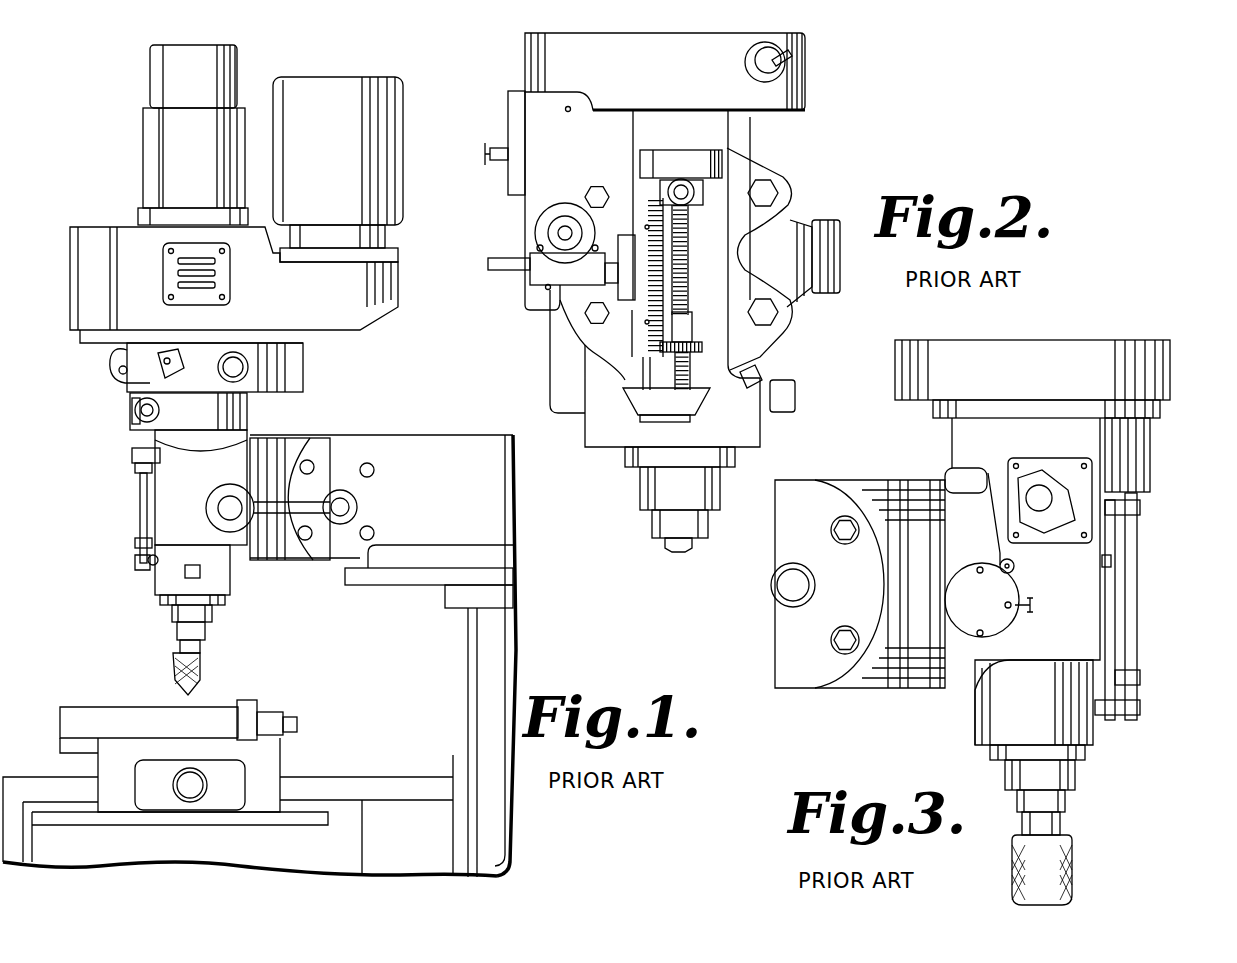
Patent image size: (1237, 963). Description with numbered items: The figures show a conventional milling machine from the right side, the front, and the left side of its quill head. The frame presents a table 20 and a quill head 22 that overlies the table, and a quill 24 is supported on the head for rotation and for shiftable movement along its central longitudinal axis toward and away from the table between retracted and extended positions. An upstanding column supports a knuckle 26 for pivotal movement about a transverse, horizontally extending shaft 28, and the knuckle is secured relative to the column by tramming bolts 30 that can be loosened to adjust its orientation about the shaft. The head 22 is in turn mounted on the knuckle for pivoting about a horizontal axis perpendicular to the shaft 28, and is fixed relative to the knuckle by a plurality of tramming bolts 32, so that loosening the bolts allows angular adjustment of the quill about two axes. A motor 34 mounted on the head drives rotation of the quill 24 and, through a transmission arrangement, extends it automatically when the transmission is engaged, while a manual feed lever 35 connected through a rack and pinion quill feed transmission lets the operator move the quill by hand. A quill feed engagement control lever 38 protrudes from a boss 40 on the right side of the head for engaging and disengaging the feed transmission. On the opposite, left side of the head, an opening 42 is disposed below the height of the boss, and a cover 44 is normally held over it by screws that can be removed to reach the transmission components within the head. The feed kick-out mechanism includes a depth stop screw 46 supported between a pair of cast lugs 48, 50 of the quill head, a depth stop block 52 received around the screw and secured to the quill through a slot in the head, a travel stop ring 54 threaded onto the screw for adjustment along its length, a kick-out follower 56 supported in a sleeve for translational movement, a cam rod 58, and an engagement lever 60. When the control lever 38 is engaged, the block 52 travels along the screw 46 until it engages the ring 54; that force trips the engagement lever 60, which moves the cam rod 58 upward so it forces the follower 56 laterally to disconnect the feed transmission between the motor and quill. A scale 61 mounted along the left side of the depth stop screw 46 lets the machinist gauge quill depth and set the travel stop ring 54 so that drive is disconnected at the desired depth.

In FIG. 1, the table 20 is at (60, 707).
In FIG. 1, the quill head 22 is at (108, 388).
In FIG. 2, the quill head 22 is at (525, 47).
In FIG. 3, the quill head 22 is at (1073, 338).
In FIG. 1, the quill 24 is at (210, 603).
In FIG. 2, the quill 24 is at (628, 455).
In FIG. 3, the quill 24 is at (1082, 752).
In FIG. 1, the knuckle 26 is at (292, 442).
In FIG. 3, the knuckle 26 is at (863, 688).
In FIG. 1, the shaft 28 is at (333, 492).
In FIG. 3, the shaft 28 is at (790, 590).
In FIG. 1, the tramming bolts 30 is at (310, 460).
In FIG. 3, the tramming bolts 30 is at (840, 525).
In FIG. 2, the tramming bolts 32 is at (586, 192).
In FIG. 3, the tramming bolts 32 is at (1110, 560).
In FIG. 1, the motor 34 is at (325, 92).
In FIG. 1, the manual feed lever 35 is at (352, 505).
In FIG. 2, the manual feed lever 35 is at (824, 232).
In FIG. 1, the quill feed engagement control lever 38 is at (134, 418).
In FIG. 2, the quill feed engagement control lever 38 is at (794, 56).
In FIG. 1, the boss 40 is at (160, 410).
In FIG. 2, the boss 40 is at (748, 74).
In FIG. 3, the opening 42 is at (1044, 470).
In FIG. 2, the cover 44 is at (508, 107).
In FIG. 3, the cover 44 is at (1035, 542).
In FIG. 1, the depth stop screw 46 is at (140, 505).
In FIG. 1, the cast lug 48 is at (160, 458).
In FIG. 2, the cast lug 48 is at (678, 158).
In FIG. 3, the cast lug 48 is at (1140, 508).
In FIG. 1, the cast lug 50 is at (140, 572).
In FIG. 2, the cast lug 50 is at (636, 400).
In FIG. 3, the cast lug 50 is at (1117, 716).
In FIG. 1, the depth stop block 52 is at (135, 468).
In FIG. 2, the depth stop block 52 is at (700, 206).
In FIG. 1, the travel stop ring 54 is at (135, 543).
In FIG. 2, the travel stop ring 54 is at (700, 335).
In FIG. 2, the kick-out follower 56 is at (505, 258).
In FIG. 2, the cam rod 58 is at (643, 380).
In FIG. 2, the engagement lever 60 is at (680, 418).
In FIG. 2, the scale 61 is at (636, 208).